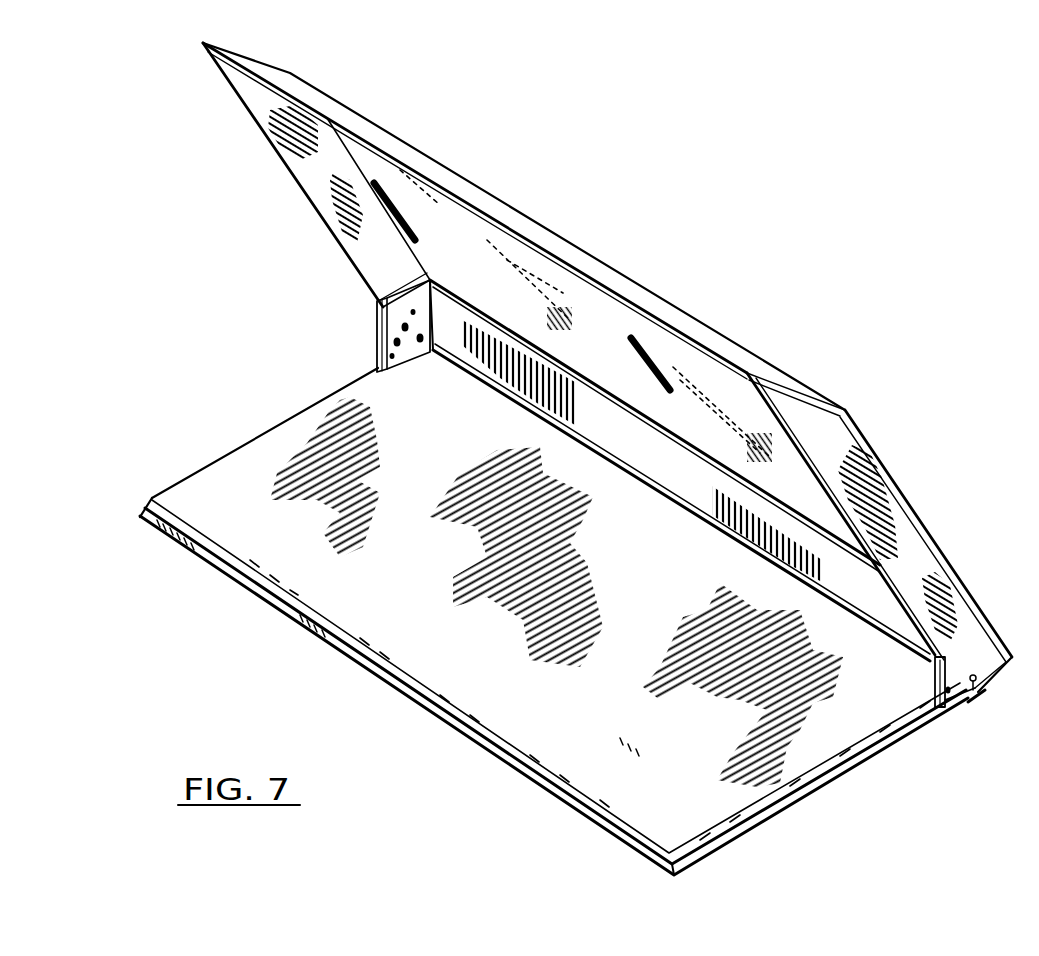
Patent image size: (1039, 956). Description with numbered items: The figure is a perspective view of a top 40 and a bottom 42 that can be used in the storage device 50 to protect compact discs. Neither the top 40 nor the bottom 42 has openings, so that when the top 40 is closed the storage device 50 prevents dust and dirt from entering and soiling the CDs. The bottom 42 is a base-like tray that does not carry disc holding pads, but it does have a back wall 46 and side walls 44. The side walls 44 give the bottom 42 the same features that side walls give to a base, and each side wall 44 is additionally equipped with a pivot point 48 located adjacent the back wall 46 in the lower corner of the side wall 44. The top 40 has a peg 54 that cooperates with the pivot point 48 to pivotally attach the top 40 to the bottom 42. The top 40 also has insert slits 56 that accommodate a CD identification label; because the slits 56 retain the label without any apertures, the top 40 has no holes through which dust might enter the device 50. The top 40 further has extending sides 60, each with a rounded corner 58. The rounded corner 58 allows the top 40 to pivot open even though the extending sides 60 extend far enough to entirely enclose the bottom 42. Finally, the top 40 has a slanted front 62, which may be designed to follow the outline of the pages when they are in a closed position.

The top 40 is at (800, 383).
The bottom 42 is at (746, 781).
The side walls 44 is at (397, 320).
The back wall 46 is at (675, 473).
The pivot point 48 is at (417, 343).
The storage device 50 is at (683, 202).
The peg 54 is at (977, 695).
The insert slits 56 is at (408, 222).
The rounded corner 58 is at (972, 708).
The extending sides 60 is at (313, 160).
The slanted front 62 is at (697, 327).